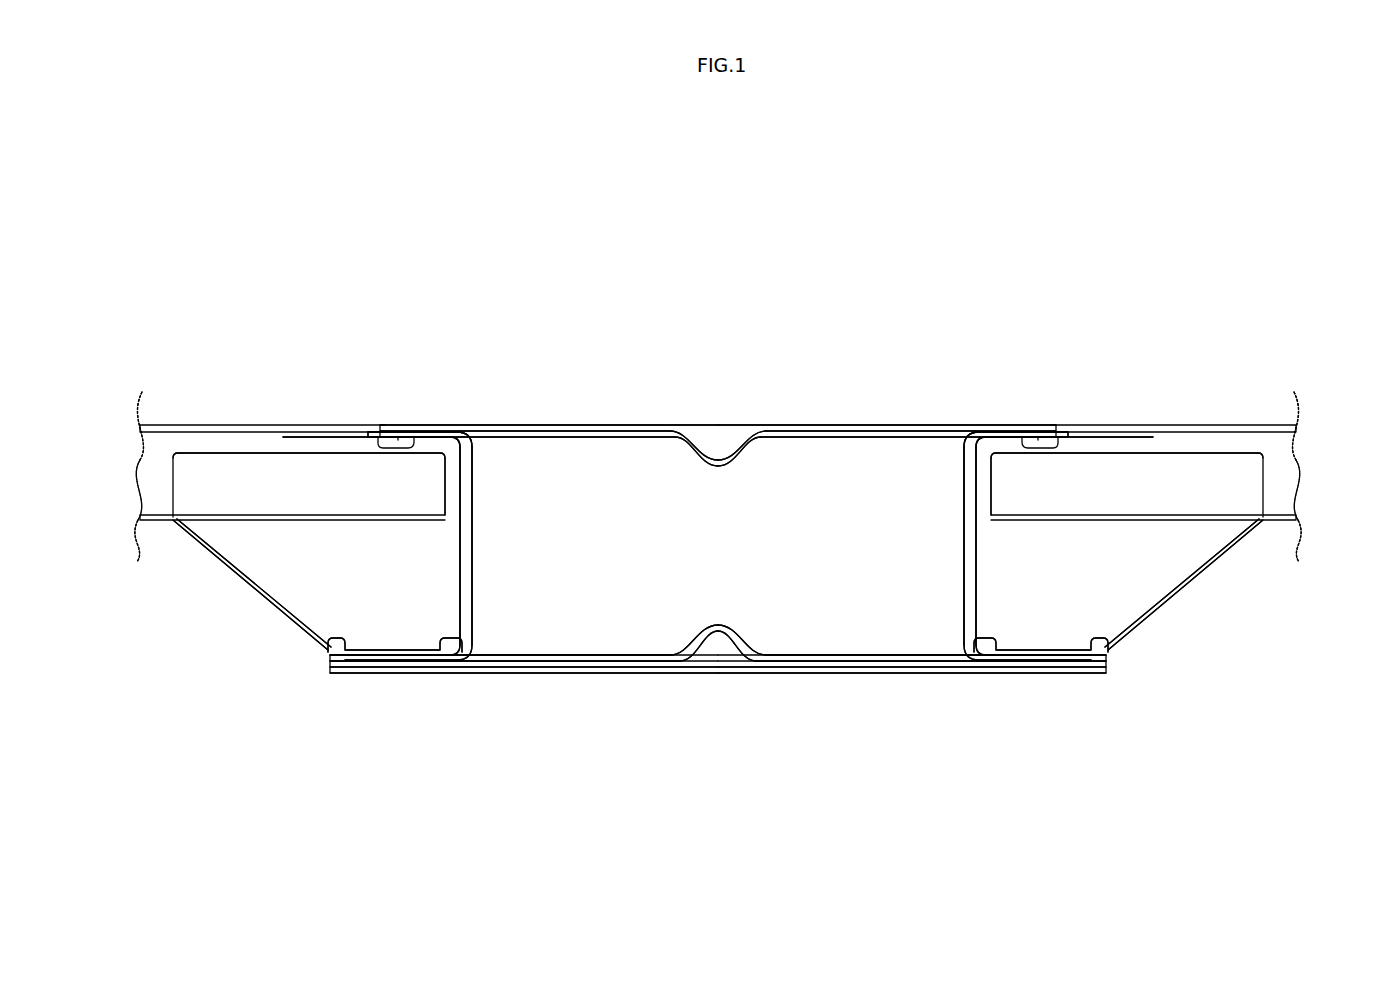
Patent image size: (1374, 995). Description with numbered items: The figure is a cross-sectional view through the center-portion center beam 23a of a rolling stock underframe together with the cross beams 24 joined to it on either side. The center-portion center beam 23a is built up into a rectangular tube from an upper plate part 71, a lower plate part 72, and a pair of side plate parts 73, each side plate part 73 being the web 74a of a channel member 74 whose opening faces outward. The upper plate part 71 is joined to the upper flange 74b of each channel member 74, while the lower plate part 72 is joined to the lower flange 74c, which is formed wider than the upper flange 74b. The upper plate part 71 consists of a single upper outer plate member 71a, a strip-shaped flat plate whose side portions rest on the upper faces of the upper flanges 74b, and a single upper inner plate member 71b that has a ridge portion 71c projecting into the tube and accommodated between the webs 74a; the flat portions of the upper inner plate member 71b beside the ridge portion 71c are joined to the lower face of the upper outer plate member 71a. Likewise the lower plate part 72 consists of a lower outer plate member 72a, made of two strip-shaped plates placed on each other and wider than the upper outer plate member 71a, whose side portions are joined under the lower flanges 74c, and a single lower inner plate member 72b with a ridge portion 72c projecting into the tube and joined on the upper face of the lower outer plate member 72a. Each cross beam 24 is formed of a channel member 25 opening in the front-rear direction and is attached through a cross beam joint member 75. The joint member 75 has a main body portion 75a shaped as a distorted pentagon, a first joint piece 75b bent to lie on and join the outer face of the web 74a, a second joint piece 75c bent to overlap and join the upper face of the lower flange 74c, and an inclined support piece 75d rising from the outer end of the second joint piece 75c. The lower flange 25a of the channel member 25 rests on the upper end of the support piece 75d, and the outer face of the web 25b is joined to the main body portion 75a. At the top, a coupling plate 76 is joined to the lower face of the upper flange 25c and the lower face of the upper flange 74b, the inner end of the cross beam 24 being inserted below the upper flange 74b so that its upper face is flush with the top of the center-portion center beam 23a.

The center-portion center beam 23a is at (746, 289).
The cross beam 24 is at (206, 417).
The channel member 25 is at (142, 492).
The lower flange 25a is at (140, 528).
The web 25b is at (142, 455).
The upper flange 25c is at (143, 425).
The upper plate part 71 is at (851, 447).
The upper outer plate member 71a is at (582, 426).
The upper inner plate member 71b is at (593, 440).
The ridge portion 71c is at (721, 467).
The lower plate part 72 is at (843, 652).
The lower outer plate member 72a is at (707, 674).
The lower inner plate member 72b is at (598, 655).
The ridge portion 72c is at (712, 624).
The side plate part 73 is at (489, 556).
The channel member 74 is at (474, 586).
The web 74a is at (474, 495).
The upper flange 74b is at (425, 433).
The lower flange 74c is at (370, 662).
The cross beam joint member 75 is at (257, 613).
The main body portion 75a is at (312, 462).
The first joint piece 75b is at (459, 575).
The second joint piece 75c is at (410, 652).
The inclined support piece 75d is at (260, 598).
The coupling plate 76 is at (386, 440).